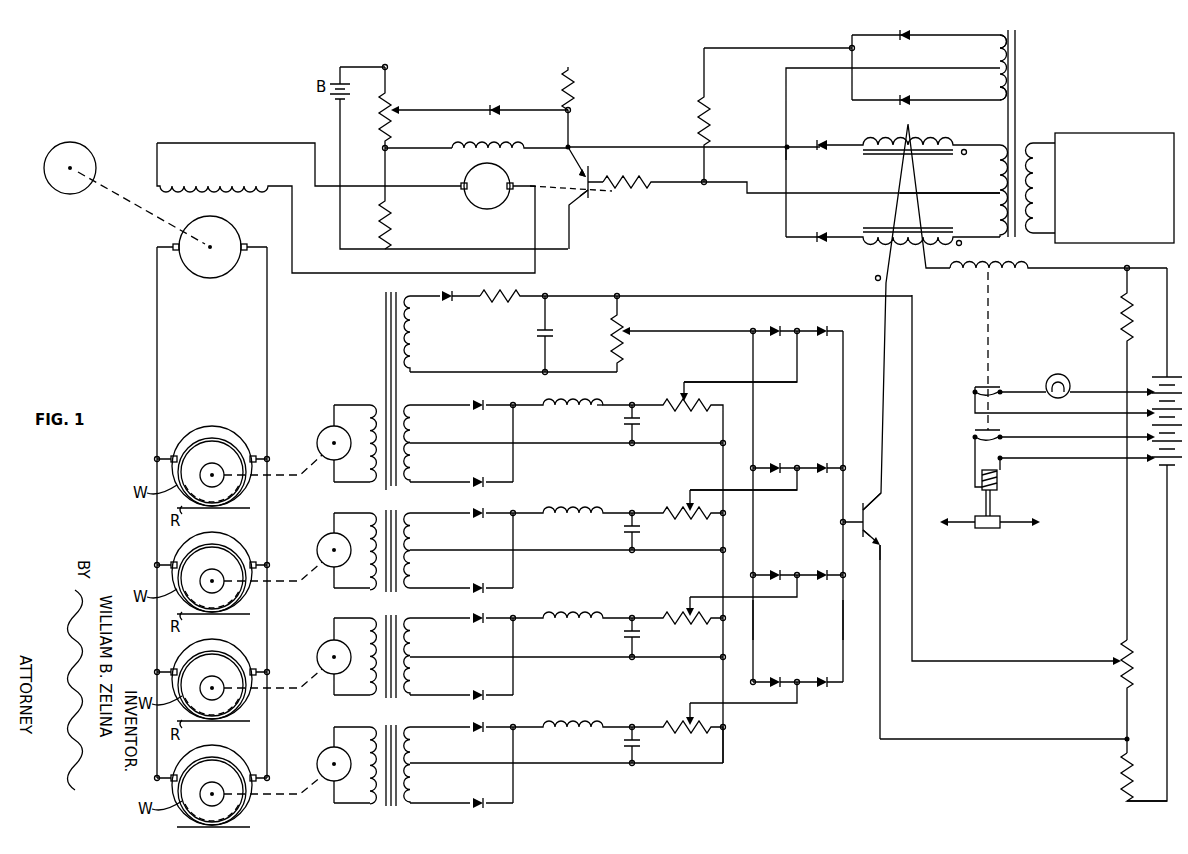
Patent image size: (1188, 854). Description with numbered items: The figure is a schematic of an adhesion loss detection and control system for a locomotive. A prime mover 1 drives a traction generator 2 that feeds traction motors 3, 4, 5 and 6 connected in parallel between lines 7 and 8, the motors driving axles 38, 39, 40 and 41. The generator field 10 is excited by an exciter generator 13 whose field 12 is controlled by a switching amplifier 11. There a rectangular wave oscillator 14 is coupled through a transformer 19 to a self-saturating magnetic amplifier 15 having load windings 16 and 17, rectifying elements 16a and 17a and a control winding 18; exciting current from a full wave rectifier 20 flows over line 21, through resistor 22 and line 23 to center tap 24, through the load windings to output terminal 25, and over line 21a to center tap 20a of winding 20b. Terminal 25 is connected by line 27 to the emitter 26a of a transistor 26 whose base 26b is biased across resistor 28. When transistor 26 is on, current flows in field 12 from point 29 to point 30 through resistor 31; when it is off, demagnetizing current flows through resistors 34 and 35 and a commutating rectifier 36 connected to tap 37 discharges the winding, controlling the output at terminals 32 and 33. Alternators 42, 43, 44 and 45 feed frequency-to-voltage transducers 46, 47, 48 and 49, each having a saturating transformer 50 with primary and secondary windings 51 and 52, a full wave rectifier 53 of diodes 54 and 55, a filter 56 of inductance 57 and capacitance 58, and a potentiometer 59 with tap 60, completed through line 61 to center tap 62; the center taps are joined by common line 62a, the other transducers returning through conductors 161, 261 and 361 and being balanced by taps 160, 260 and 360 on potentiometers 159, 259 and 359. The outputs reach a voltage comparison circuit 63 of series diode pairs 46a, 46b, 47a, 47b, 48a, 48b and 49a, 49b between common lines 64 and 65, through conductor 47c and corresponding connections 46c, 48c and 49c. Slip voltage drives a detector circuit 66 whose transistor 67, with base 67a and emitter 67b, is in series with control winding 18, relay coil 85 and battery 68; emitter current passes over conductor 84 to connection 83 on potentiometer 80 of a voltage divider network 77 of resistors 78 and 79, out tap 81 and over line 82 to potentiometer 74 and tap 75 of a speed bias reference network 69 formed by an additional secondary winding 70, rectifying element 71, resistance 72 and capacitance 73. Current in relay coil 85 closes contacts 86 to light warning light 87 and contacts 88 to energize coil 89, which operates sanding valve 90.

The prime mover 1 is at (78, 143).
The traction generator 2 is at (210, 275).
The traction motor 3 is at (240, 435).
The traction motor 4 is at (242, 549).
The traction motor 5 is at (244, 655).
The traction motor 6 is at (244, 761).
The line 7 is at (156, 345).
The line 8 is at (267, 345).
The generator field 10 is at (212, 188).
The switching amplifier 11 is at (729, 229).
The exciter field winding 12 is at (474, 153).
The exciter generator 13 is at (487, 186).
The rectangular wave oscillator 14 is at (1114, 188).
The self-saturating magnetic amplifier 15 is at (895, 191).
The load winding 16 is at (888, 142).
The rectifying element 16a is at (814, 143).
The load winding 17 is at (860, 226).
The rectifying element 17a is at (822, 244).
The control winding 18 is at (916, 197).
The transformer 19 is at (1014, 235).
The full wave rectifier 20 is at (896, 133).
The center tap 20a is at (995, 64).
The winding 20b is at (995, 88).
The line 21 is at (734, 49).
The line 21a is at (785, 144).
The resistor 22 is at (698, 113).
The line 23 is at (746, 193).
The center tap 24 is at (995, 198).
The output terminal 25 is at (784, 151).
The transistor 26 is at (582, 186).
The emitter 26a is at (592, 174).
The base 26b is at (592, 195).
The line 27 is at (617, 146).
The resistor 28 is at (640, 190).
The point 29 is at (390, 148).
The point 30 is at (566, 147).
The resistor 31 is at (384, 130).
The exciter generator terminal 32 is at (463, 195).
The exciter generator terminal 33 is at (511, 192).
The resistor 34 is at (576, 98).
The resistor 35 is at (388, 230).
The commutating rectifier 36 is at (491, 108).
The tap 37 is at (397, 112).
The axle 38 is at (215, 471).
The axle 39 is at (215, 577).
The axle 40 is at (215, 684).
The axle 41 is at (215, 790).
The alternator 42 is at (322, 425).
The alternator 43 is at (322, 532).
The alternator 44 is at (322, 640).
The alternator 45 is at (322, 747).
The frequency-to-voltage transducer 46 is at (557, 462).
The diode 46a is at (770, 328).
The diode 46b is at (822, 328).
The conductor 46c is at (794, 366).
The frequency-to-voltage transducer 47 is at (484, 550).
The diode 47a is at (770, 466).
The diode 47b is at (822, 470).
The conductor 47c is at (795, 490).
The frequency-to-voltage transducer 48 is at (563, 656).
The diode 48a is at (770, 573).
The diode 48b is at (822, 577).
The conductor 48c is at (796, 598).
The frequency-to-voltage transducer 49 is at (563, 765).
The diode 49a is at (770, 680).
The diode 49b is at (822, 684).
The conductor 49c is at (790, 704).
The saturating transformer 50 is at (397, 482).
The primary winding 51 is at (360, 409).
The secondary winding 52 is at (410, 460).
The full wave rectifier 53 is at (479, 462).
The diode 54 is at (484, 402).
The diode 55 is at (484, 482).
The filter 56 is at (572, 418).
The inductance 57 is at (604, 403).
The capacitance 58 is at (642, 445).
The potentiometer 59 is at (682, 410).
The variable tap 60 is at (683, 382).
The line 61 is at (600, 445).
The center tap 62 is at (410, 433).
The common line 62a is at (722, 562).
The voltage comparison circuit 63 is at (794, 524).
The common line 64 is at (748, 625).
The common line 65 is at (844, 633).
The detector circuit 66 is at (896, 480).
The transistor 67 is at (870, 528).
The base 67a is at (860, 550).
The emitter 67b is at (892, 550).
The locomotive battery 68 is at (1150, 470).
The speed bias reference network 69 is at (489, 349).
The additional secondary winding 70 is at (414, 346).
The rectifying element 71 is at (451, 297).
The resistance 72 is at (512, 298).
The capacitance 73 is at (552, 335).
The potentiometer 74 is at (613, 322).
The variable tap 75 is at (630, 335).
The voltage divider network 77 is at (1033, 351).
The resistor 78 is at (1121, 302).
The resistor 79 is at (1122, 777).
The potentiometer 80 is at (1118, 677).
The variable tap 81 is at (1108, 652).
The line 82 is at (957, 653).
The connection 83 is at (1122, 737).
The conductor 84 is at (990, 739).
The relay coil 85 is at (1007, 269).
The contacts 86 is at (970, 396).
The warning light 87 is at (1054, 375).
The contacts 88 is at (970, 444).
The coil 89 is at (1002, 480).
The valve 90 is at (976, 530).
The potentiometer 159 is at (696, 521).
The variable tap 160 is at (690, 490).
The conductor 161 is at (548, 549).
The potentiometer 259 is at (687, 629).
The variable tap 260 is at (690, 605).
The conductor 261 is at (544, 654).
The potentiometer 359 is at (687, 739).
The variable tap 360 is at (681, 704).
The conductor 361 is at (548, 762).